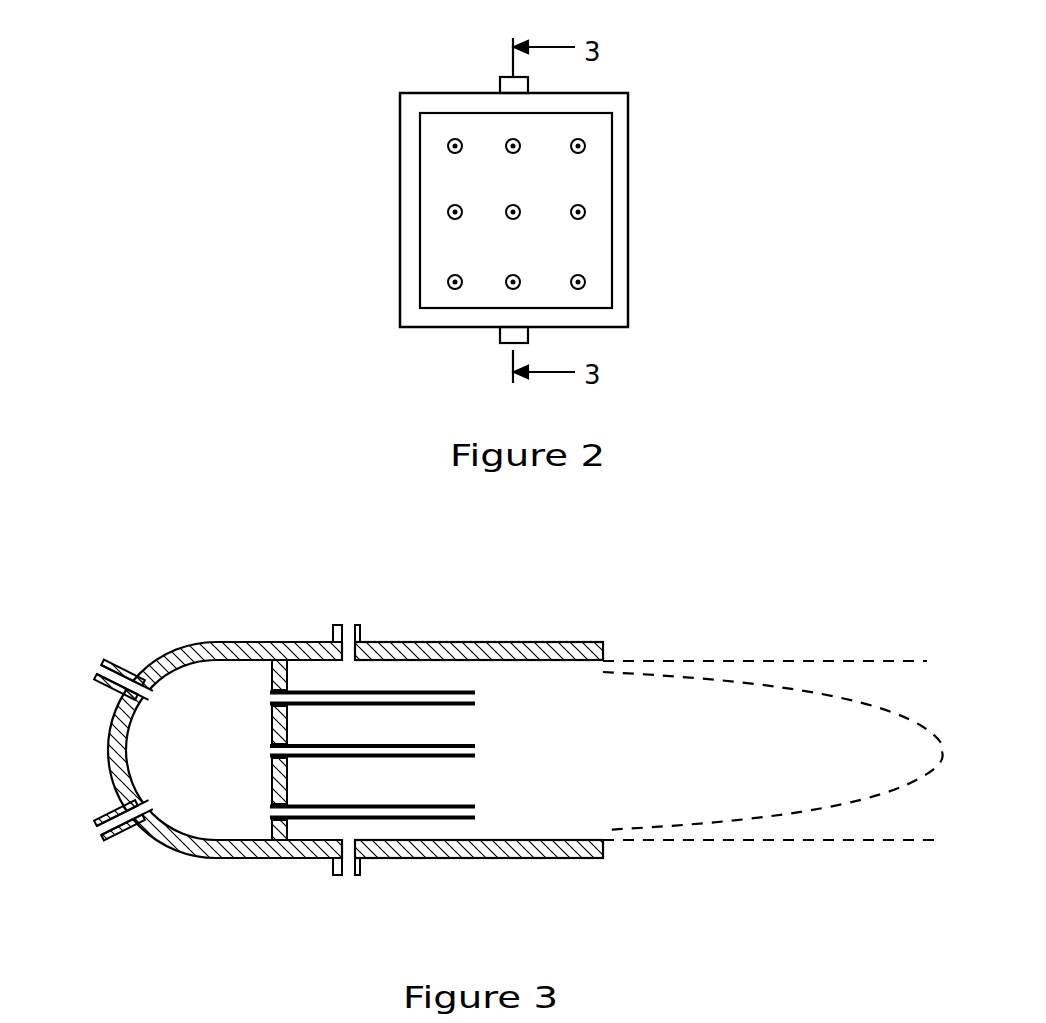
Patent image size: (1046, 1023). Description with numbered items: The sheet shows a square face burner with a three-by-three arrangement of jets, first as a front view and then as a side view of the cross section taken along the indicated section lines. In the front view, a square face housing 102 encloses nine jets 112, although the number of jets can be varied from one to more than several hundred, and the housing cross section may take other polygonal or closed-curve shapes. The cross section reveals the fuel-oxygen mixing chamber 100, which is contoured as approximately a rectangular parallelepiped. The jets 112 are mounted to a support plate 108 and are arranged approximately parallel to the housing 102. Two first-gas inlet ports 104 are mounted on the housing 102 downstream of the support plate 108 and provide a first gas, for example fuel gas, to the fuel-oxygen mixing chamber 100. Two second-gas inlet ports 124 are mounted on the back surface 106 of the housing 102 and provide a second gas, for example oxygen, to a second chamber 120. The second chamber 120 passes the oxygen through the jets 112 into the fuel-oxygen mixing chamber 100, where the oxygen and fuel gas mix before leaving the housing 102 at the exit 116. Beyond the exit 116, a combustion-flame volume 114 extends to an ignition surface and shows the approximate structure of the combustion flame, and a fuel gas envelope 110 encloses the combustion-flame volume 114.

In FIG. 2, the fuel-oxygen mixing chamber 100 is at (538, 167).
In FIG. 3, the fuel-oxygen mixing chamber 100 is at (375, 733).
In FIG. 2, the housing 102 is at (645, 210).
In FIG. 3, the housing 102 is at (550, 632).
In FIG. 2, the first-gas inlet ports 104 is at (500, 79).
In FIG. 3, the first-gas inlet ports 104 is at (343, 628).
In FIG. 3, the back surface 106 is at (128, 748).
In FIG. 3, the support plate 108 is at (270, 725).
In FIG. 3, the fuel gas envelope 110 is at (770, 840).
In FIG. 2, the jets 112 is at (448, 146).
In FIG. 3, the jets 112 is at (475, 755).
In FIG. 3, the combustion-flame volume 114 is at (783, 684).
In FIG. 2, the exit 116 is at (420, 253).
In FIG. 3, the exit 116 is at (763, 750).
In FIG. 3, the second chamber 120 is at (205, 770).
In FIG. 3, the second-gas inlet ports 124 is at (112, 660).